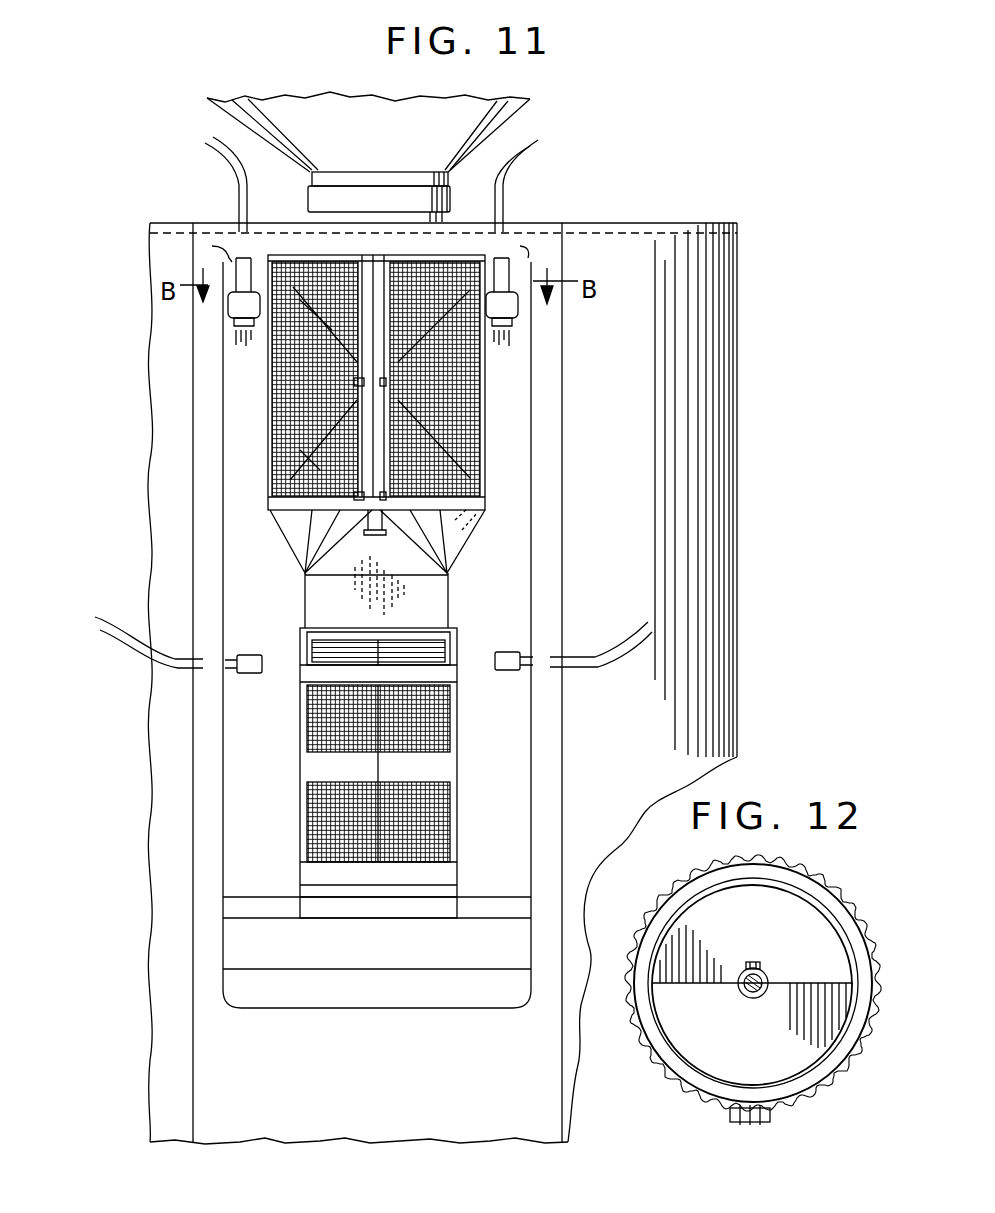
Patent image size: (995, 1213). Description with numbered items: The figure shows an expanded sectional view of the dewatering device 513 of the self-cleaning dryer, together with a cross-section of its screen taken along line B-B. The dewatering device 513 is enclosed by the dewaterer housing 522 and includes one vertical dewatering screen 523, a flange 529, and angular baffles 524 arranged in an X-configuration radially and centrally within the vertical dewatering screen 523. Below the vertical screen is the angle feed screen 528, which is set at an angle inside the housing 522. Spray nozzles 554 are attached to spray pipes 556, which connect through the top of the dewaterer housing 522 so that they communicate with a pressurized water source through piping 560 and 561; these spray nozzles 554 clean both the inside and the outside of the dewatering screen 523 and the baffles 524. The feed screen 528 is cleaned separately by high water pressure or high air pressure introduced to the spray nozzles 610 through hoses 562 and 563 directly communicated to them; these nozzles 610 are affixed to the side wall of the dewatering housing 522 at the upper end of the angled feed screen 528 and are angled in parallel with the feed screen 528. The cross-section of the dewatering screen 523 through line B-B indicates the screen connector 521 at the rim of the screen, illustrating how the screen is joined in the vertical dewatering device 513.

In FIG. 11, the dewatering device 513 is at (556, 208).
In FIG. 12, the screen connector 521 is at (745, 1120).
In FIG. 11, the housing 522 is at (562, 508).
In FIG. 11, the vertical dewatering screen 523 is at (480, 406).
In FIG. 12, the vertical dewatering screen 523 is at (668, 894).
In FIG. 11, the X-configuration baffles 524 is at (318, 447).
In FIG. 11, the angle feed screen 528 is at (443, 802).
In FIG. 11, the flange 529 is at (327, 574).
In FIG. 11, the spray nozzles 554 is at (230, 305).
In FIG. 11, the spray pipes 556 is at (212, 246).
In FIG. 11, the piping 560 is at (210, 150).
In FIG. 11, the piping 561 is at (528, 152).
In FIG. 11, the hoses 562 is at (125, 633).
In FIG. 11, the side pipe 563 is at (612, 647).
In FIG. 11, the spray nozzles 610 is at (258, 674).